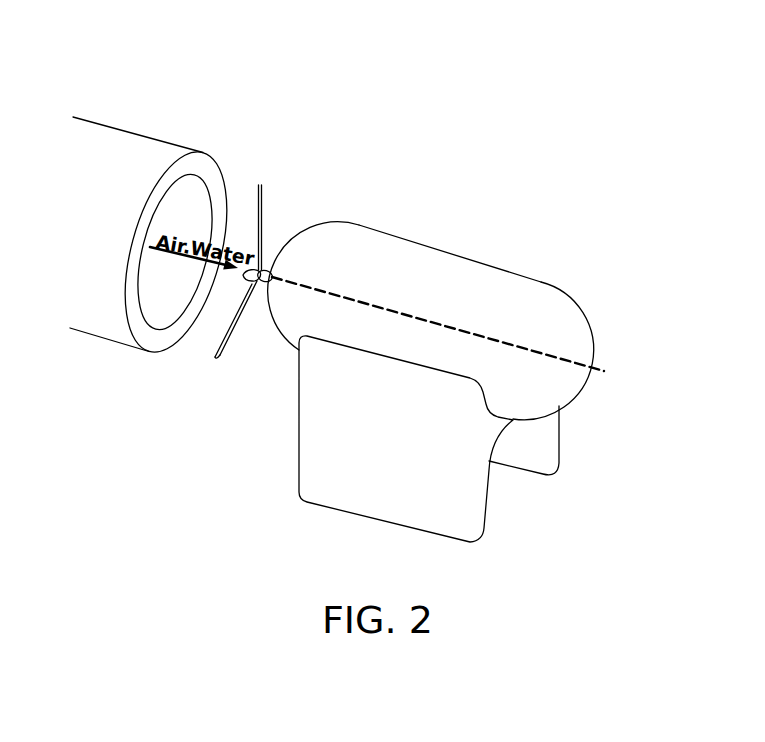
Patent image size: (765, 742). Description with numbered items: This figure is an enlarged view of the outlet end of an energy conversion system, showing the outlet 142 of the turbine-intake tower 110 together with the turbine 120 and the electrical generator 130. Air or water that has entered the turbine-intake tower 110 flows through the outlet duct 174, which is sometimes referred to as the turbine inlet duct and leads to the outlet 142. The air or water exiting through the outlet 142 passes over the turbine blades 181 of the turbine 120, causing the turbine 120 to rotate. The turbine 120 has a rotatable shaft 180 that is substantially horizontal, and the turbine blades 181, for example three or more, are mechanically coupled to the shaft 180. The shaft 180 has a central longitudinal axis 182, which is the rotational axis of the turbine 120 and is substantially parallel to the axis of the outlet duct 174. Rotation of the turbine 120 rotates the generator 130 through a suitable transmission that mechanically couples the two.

The turbine-intake tower 110 is at (191, 199).
The outlet duct 174 is at (127, 142).
The outlet 142 is at (197, 198).
The turbine 120 is at (262, 203).
The rotatable shaft 180 is at (253, 283).
The turbine blades 181 is at (217, 358).
The electrical generator 130 is at (442, 300).
The central longitudinal axis 182 is at (600, 369).